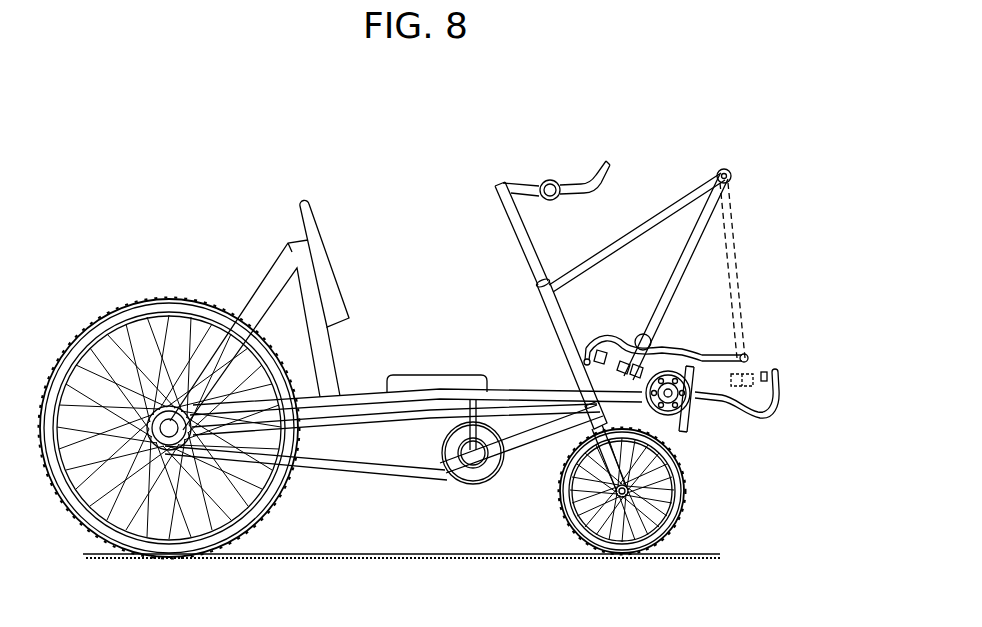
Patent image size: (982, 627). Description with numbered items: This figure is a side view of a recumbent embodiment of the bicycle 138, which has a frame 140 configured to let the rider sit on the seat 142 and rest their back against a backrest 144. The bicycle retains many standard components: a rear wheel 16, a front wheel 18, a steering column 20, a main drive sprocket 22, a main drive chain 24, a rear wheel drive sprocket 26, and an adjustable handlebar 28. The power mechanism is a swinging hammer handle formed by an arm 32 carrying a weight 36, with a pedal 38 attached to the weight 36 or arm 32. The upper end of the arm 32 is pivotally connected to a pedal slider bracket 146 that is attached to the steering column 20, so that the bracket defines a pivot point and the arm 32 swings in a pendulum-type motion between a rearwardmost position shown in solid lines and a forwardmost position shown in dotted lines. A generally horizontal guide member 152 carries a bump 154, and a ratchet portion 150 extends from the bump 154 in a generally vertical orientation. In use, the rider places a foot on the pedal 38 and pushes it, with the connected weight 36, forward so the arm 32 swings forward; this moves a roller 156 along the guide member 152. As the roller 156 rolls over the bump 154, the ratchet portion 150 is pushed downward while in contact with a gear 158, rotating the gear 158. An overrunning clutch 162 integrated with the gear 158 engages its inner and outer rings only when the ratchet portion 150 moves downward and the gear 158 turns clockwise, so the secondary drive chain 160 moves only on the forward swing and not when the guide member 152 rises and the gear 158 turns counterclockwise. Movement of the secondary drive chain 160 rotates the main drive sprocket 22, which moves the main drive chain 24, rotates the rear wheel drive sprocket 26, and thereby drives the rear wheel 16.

The rear wheel 16 is at (132, 305).
The front wheel 18 is at (642, 522).
The steering column 20 is at (543, 302).
The main drive sprocket 22 is at (468, 476).
The main drive chain 24 is at (340, 474).
The rear wheel drive sprocket 26 is at (169, 300).
The adjustable handlebar 28 is at (525, 192).
The arm 32 is at (685, 267).
The weight 36 is at (624, 346).
The pedal 38 is at (625, 366).
The bicycle 138 is at (423, 303).
The frame 140 is at (258, 297).
The seat 142 is at (440, 375).
The backrest 144 is at (333, 243).
The pedal slider bracket 146 is at (635, 234).
The ratchet portion 150 is at (742, 406).
The guide member 152 is at (748, 358).
The bump 154 is at (673, 350).
The roller 156 is at (746, 355).
The gear 158 is at (692, 410).
The secondary drive chain 160 is at (566, 457).
The overrunning clutch 162 is at (676, 432).